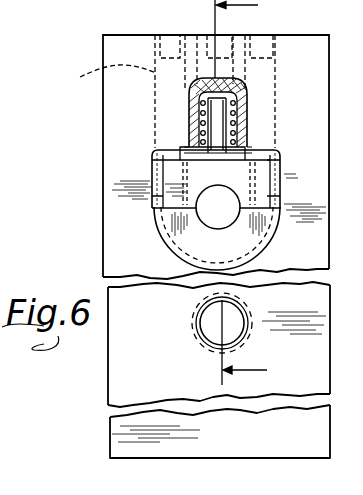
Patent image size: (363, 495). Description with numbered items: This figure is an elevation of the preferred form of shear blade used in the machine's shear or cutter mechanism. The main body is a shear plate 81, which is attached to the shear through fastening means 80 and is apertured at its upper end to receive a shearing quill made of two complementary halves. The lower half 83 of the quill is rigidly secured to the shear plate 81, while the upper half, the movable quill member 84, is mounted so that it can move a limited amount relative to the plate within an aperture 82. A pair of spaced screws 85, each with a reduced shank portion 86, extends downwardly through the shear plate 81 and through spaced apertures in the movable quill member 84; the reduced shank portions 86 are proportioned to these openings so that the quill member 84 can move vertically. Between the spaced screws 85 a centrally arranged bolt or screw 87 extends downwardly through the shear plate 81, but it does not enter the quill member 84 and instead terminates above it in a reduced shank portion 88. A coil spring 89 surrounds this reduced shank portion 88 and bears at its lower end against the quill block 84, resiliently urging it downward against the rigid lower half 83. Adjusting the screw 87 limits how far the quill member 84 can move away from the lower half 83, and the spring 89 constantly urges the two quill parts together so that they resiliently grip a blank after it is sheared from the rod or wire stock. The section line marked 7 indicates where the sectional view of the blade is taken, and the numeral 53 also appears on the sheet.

The section line 7- 7 is at (241, 196).
The housing 53 is at (33, 6).
The means 80 is at (198, 323).
The shear plate 81 is at (133, 117).
The aperture 82 is at (158, 177).
The lower half of shearing quill 83 is at (217, 238).
The movable quill member 84 is at (216, 188).
The spaced screws 85 is at (297, 29).
The reduced shank portions 86 is at (153, 158).
The centrally arranged bolt or screw 87 is at (232, 83).
The reduced shank portion 88 is at (226, 108).
The coil spring 89 is at (234, 132).